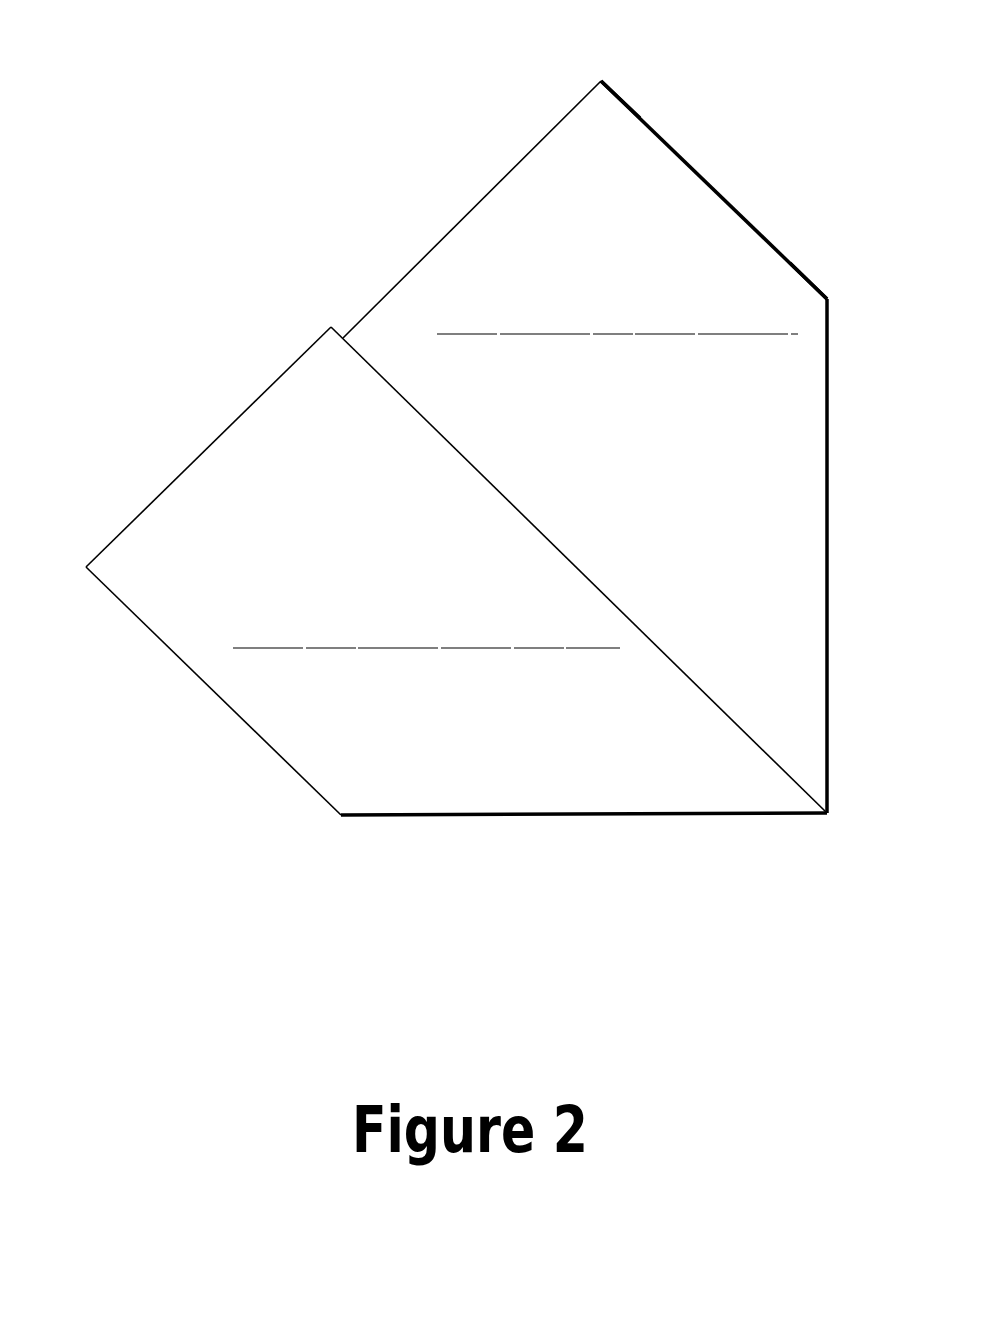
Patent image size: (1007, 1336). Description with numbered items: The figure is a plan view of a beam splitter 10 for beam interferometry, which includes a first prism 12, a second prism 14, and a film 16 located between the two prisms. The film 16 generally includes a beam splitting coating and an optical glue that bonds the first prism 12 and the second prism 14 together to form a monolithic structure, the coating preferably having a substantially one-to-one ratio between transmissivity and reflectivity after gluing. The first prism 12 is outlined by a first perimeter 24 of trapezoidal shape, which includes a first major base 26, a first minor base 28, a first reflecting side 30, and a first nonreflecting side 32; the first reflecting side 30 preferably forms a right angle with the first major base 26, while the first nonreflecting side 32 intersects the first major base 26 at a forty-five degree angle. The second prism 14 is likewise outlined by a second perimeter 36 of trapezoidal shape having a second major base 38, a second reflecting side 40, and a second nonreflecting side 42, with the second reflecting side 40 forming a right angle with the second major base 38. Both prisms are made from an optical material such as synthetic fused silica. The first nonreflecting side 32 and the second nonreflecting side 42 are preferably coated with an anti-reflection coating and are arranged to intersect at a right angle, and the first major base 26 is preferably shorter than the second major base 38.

The beam splitter 10 is at (203, 188).
The first prism 12 is at (692, 167).
The second prism 14 is at (210, 690).
The film 16 is at (395, 385).
The first perimeter 24 is at (777, 256).
The first major base 26 is at (617, 608).
The first minor base 28 is at (635, 112).
The first reflecting side 30 is at (485, 192).
The first nonreflecting side 32 is at (829, 422).
The second perimeter 36 is at (313, 790).
The second major base 38 is at (505, 498).
The second reflecting side 40 is at (232, 422).
The second nonreflecting side 42 is at (610, 817).